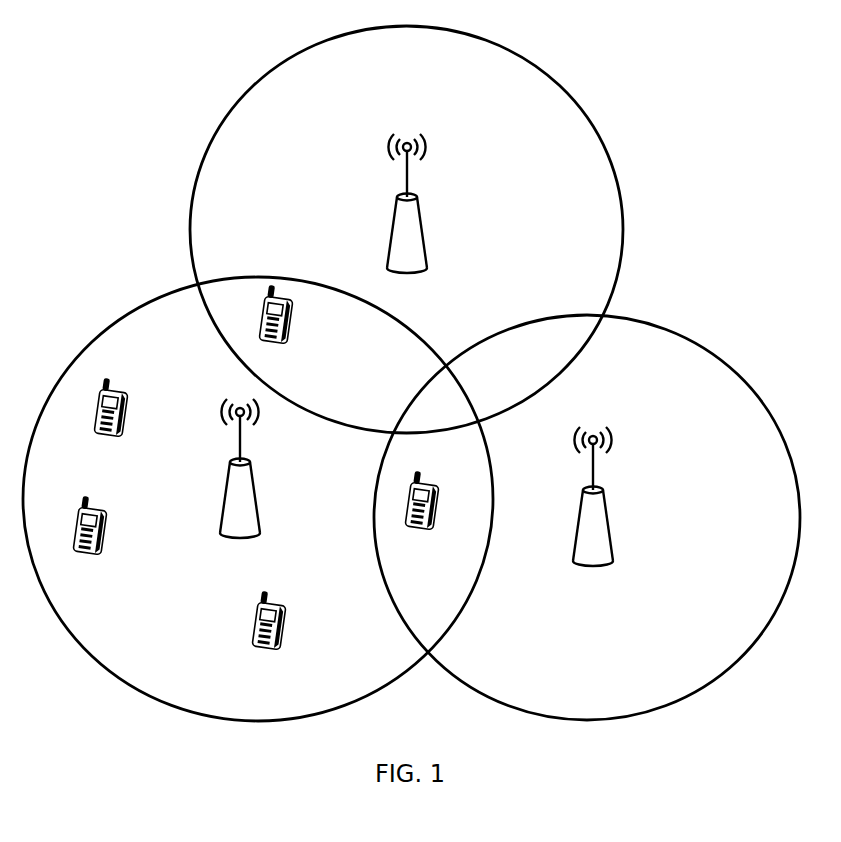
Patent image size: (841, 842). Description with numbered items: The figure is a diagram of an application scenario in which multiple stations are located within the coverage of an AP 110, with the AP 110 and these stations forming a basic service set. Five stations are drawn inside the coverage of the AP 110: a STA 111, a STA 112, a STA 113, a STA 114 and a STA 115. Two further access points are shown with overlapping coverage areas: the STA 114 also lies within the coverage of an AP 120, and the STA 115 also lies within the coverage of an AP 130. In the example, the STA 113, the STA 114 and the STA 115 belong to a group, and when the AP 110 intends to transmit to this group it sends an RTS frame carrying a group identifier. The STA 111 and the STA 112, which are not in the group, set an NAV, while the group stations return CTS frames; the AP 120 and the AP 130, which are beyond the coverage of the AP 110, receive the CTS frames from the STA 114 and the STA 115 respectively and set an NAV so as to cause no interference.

The AP 110 is at (240, 486).
The AP 120 is at (593, 512).
The AP 130 is at (407, 220).
The STA 111 is at (122, 424).
The STA 112 is at (103, 540).
The STA 113 is at (281, 636).
The STA 114 is at (434, 514).
The STA 115 is at (288, 329).